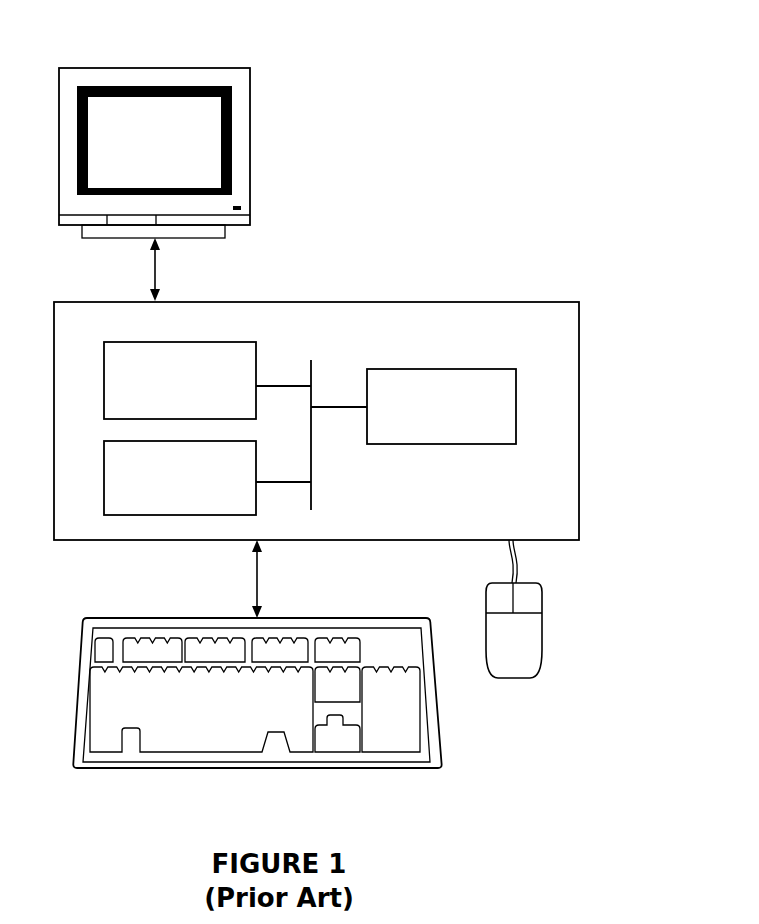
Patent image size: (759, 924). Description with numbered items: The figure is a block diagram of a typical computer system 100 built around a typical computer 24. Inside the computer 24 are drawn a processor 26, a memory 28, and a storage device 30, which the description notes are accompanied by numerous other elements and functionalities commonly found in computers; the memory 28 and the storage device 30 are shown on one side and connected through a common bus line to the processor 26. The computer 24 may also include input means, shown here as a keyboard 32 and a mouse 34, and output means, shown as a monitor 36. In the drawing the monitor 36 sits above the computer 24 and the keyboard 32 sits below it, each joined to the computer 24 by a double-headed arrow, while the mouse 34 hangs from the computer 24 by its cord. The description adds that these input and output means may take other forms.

The computer system 100 is at (682, 98).
The computer 24 is at (354, 421).
The processor 26 is at (429, 417).
The memory 28 is at (167, 392).
The storage device 30 is at (167, 489).
The keyboard 32 is at (199, 714).
The mouse 34 is at (504, 647).
The monitor 36 is at (144, 155).